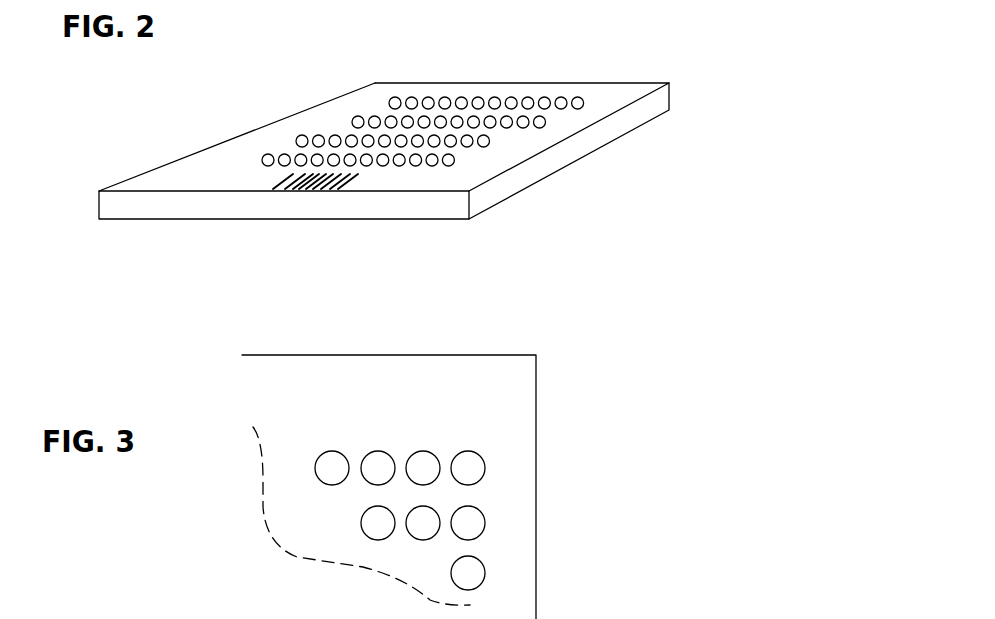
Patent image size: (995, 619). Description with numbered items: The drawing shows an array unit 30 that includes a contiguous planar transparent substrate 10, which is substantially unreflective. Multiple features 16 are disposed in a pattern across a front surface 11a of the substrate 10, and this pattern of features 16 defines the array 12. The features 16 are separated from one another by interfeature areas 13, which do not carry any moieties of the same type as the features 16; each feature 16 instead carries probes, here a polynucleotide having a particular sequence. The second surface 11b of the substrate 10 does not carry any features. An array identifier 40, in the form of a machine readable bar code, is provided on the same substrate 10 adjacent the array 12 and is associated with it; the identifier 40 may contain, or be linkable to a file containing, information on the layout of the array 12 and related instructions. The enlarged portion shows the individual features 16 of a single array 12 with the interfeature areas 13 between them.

In FIG. 2, the substrate 10 is at (545, 173).
In FIG. 2, the front surface 11a is at (613, 97).
In FIG. 2, the second surface 11b is at (607, 150).
In FIG. 2, the array 12 is at (305, 138).
In FIG. 2, the array unit 30 is at (411, 136).
In FIG. 2, the array identifier 40 is at (290, 193).
In FIG. 3, the interfeature areas 13 is at (447, 457).
In FIG. 3, the features 16 is at (468, 523).